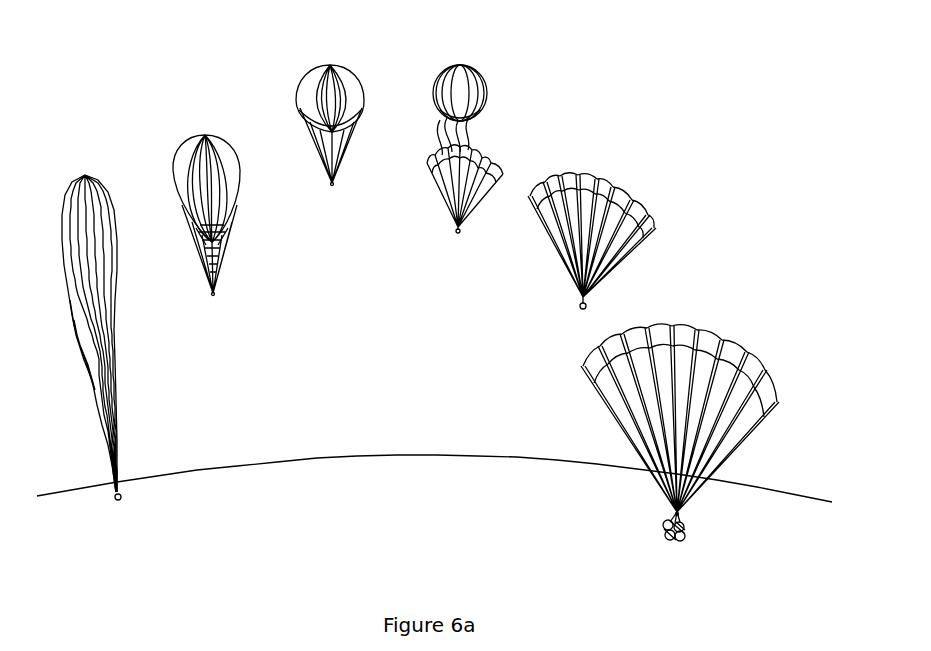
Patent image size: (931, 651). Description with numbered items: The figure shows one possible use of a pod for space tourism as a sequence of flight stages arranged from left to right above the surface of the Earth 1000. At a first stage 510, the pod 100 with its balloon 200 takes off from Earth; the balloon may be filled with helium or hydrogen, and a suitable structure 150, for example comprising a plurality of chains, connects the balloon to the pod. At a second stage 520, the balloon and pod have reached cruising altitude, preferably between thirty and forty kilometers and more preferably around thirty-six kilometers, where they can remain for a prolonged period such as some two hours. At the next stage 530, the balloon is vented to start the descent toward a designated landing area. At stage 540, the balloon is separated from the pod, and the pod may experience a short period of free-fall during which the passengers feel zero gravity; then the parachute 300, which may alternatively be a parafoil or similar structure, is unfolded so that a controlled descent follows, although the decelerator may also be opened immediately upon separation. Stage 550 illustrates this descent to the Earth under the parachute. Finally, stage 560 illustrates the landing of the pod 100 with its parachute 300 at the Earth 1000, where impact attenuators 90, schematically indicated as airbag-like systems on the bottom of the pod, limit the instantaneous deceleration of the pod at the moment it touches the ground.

The impact attenuators 90 is at (657, 545).
The pod 100 is at (197, 292).
The structure 150 is at (222, 247).
The balloon 200 is at (195, 137).
The parachute 300 is at (480, 160).
The first stage 510 is at (143, 402).
The second stage 520 is at (252, 280).
The stage 530 is at (335, 208).
The stage 540 is at (488, 224).
The stage 550 is at (537, 288).
The stage 560 is at (635, 466).
The Earth 1000 is at (392, 480).